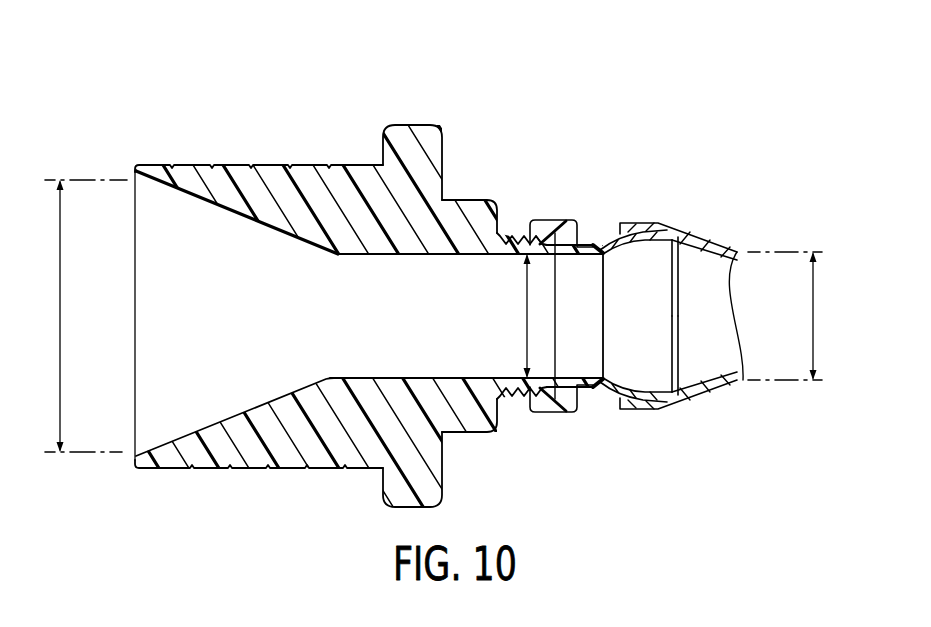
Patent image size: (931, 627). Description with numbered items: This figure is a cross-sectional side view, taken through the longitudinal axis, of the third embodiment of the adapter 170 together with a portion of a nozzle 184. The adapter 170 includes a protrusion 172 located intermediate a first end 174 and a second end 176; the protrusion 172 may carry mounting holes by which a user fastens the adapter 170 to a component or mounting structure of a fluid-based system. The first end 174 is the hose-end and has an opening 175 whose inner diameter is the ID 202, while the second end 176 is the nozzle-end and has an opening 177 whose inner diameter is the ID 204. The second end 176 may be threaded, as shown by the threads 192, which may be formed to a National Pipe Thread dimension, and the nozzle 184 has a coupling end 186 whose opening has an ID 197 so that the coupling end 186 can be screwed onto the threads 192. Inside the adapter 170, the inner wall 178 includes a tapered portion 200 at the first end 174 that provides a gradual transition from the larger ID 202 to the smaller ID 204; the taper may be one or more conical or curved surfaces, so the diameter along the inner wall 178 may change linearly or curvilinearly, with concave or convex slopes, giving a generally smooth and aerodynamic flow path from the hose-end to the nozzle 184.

The adapter 170 is at (368, 278).
The protrusion 172 is at (412, 124).
The first end 174 is at (155, 163).
The opening 175 is at (128, 155).
The second end 176 is at (506, 233).
The opening 177 is at (540, 247).
The inner wall 178 is at (136, 448).
The nozzle 184 is at (707, 219).
The coupling end 186 is at (558, 220).
The threads 192 is at (515, 404).
The ID 197 is at (813, 312).
The tapered portion 200 is at (318, 258).
The ID 202 is at (62, 312).
The ID 204 is at (526, 322).